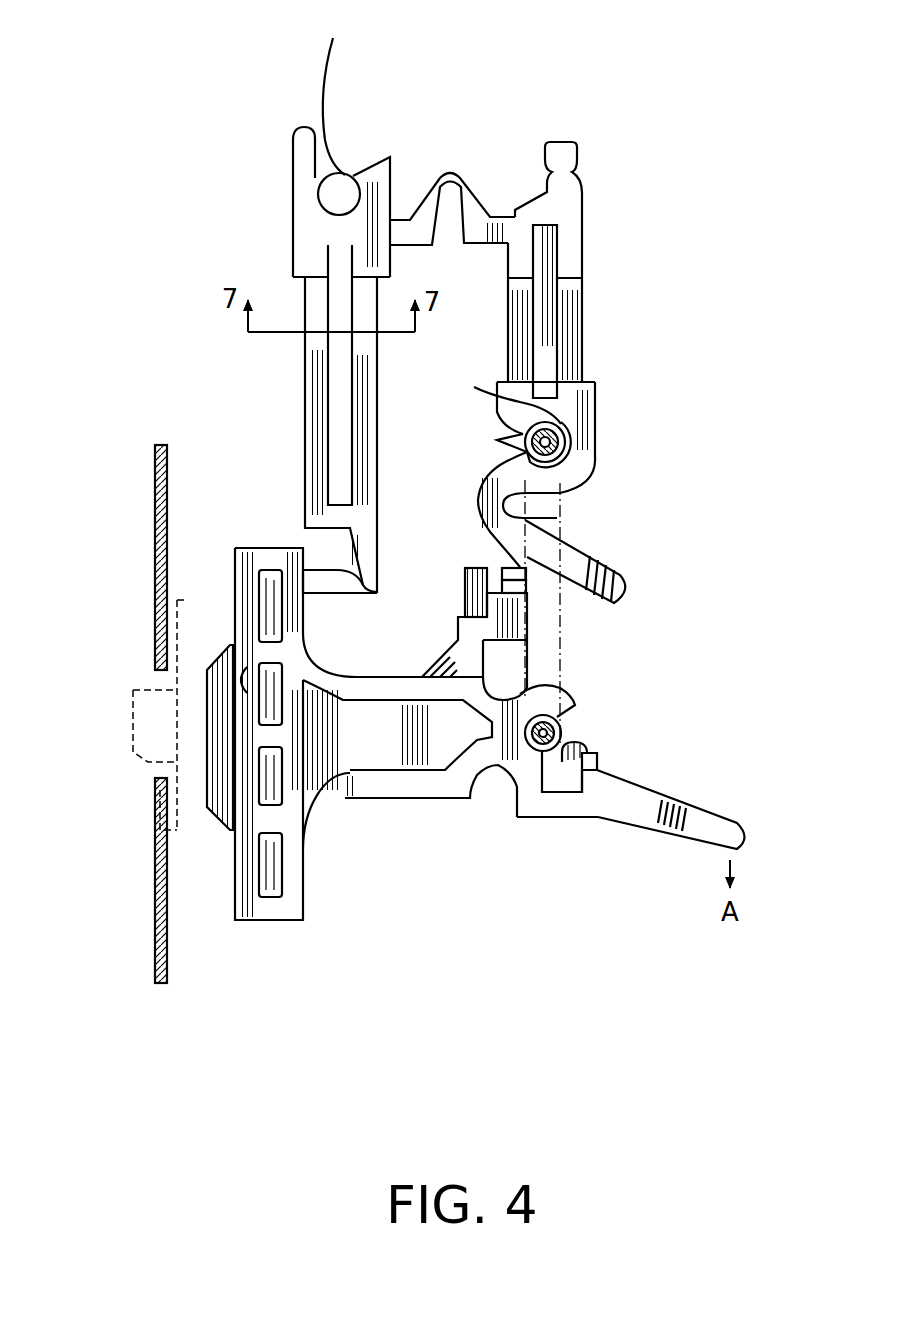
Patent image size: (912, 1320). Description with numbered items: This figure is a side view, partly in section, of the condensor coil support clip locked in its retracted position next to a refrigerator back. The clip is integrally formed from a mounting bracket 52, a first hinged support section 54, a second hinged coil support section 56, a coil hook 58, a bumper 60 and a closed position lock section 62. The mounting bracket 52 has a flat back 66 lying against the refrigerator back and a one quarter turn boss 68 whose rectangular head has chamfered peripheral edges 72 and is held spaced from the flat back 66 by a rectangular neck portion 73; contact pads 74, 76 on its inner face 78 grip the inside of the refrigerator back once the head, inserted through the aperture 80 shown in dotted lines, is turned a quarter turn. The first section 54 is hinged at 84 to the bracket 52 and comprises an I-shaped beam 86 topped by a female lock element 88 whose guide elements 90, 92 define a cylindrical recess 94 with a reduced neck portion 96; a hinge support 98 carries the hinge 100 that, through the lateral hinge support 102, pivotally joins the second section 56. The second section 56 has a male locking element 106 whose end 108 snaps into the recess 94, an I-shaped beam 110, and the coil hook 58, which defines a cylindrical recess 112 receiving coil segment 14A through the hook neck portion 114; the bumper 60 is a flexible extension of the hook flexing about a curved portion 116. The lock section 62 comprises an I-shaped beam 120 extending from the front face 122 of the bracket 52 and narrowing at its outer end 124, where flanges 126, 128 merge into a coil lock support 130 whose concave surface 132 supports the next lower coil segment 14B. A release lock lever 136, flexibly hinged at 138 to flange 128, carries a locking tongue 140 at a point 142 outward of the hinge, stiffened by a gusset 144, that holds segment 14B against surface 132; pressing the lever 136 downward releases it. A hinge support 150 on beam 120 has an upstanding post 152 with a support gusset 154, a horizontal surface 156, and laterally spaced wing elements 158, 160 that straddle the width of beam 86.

The first hinged support section 54 is at (289, 320).
The second hinged coil support section 56 is at (566, 333).
The coil hook 58 is at (600, 449).
The bumper 60 is at (634, 573).
The closed position lock section 62 is at (492, 761).
The flat back 66 is at (233, 597).
The one quarter turn boss 68 is at (230, 646).
The chamfered peripheral edges 72 is at (222, 820).
The rectangular neck portion 73 is at (140, 702).
The contact pad 74 is at (240, 688).
The contact pad 76 is at (217, 793).
The inner face 78 is at (210, 773).
The aperture 80 is at (157, 672).
The hinge 84 is at (377, 610).
The beam 86 is at (305, 367).
The female lock element 88 is at (293, 257).
The guide element 90 is at (292, 138).
The guide element 92 is at (370, 162).
The cylindrical recess 94 is at (318, 200).
The reduced neck portion 96 is at (337, 89).
The hinge support 98 is at (418, 198).
The hinge 100 is at (451, 170).
The lateral hinge support 102 is at (478, 192).
The male locking element 106 is at (583, 213).
The end 108 is at (568, 160).
The I-shaped beam 110 is at (583, 305).
The cylindrical recess 112 is at (511, 406).
The hook neck portion 114 is at (497, 440).
The coil segment 14A is at (562, 437).
The coil segment 14B is at (560, 726).
The curved portion 116 is at (557, 518).
The beam 120 is at (387, 753).
The front face 122 is at (305, 910).
The outer end 124 is at (480, 740).
The flange 126 is at (560, 701).
The flange 128 is at (523, 758).
The coil lock support 130 is at (660, 775).
The concave surface 132 is at (561, 731).
The release lock lever 136 is at (745, 847).
The hinge 138 is at (557, 820).
The locking tongue 140 is at (588, 757).
The point 142 is at (588, 780).
The gusset 144 is at (605, 779).
The hinge support 150 is at (461, 598).
The upstanding post 152 is at (484, 666).
The support gusset 154 is at (440, 657).
The horizontal surface 156 is at (514, 586).
The wing element 158 is at (463, 568).
The wing element 160 is at (505, 562).
The mounting bracket 52 is at (172, 577).